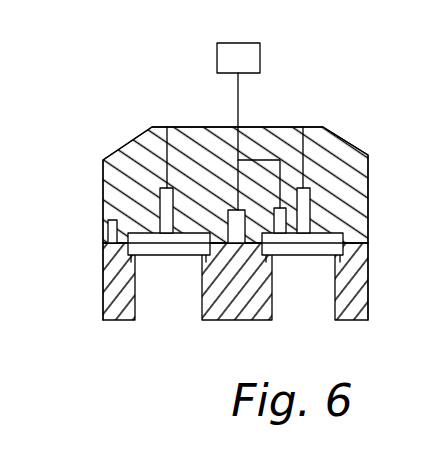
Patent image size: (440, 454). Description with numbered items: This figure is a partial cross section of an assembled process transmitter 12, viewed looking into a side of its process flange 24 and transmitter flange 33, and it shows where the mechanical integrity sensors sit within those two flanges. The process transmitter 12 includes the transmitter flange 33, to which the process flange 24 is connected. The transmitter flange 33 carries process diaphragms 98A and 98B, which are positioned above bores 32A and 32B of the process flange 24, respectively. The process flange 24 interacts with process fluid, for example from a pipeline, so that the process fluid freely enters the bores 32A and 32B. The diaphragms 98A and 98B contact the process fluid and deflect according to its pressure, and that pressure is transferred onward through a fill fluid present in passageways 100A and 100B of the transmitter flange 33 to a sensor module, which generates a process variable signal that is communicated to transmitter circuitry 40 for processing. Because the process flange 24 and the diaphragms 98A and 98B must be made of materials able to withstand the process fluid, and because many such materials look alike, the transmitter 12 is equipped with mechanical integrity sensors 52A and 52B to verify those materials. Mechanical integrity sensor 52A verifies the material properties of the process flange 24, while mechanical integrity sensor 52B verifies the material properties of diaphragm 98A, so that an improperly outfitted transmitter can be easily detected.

The process transmitter 12 is at (180, 100).
The transmitter circuitry 40 is at (238, 85).
The transmitter flange 33 is at (333, 147).
The process flange 24 is at (370, 247).
The passageway 100B is at (170, 200).
The passageway 100A is at (312, 197).
The mechanical integrity sensor 52B is at (270, 209).
The mechanical integrity sensor 52A is at (226, 286).
The process diaphragm 98B is at (125, 244).
The process diaphragm 98A is at (322, 250).
The bore 32B is at (165, 285).
The bore 32A is at (297, 270).